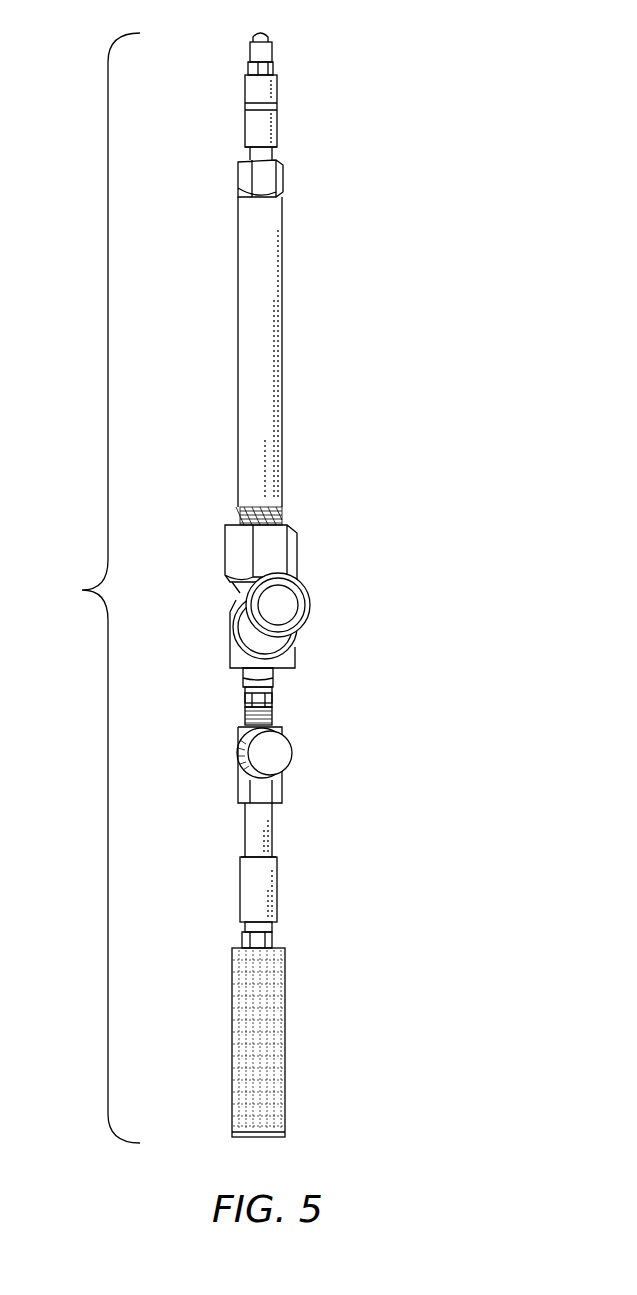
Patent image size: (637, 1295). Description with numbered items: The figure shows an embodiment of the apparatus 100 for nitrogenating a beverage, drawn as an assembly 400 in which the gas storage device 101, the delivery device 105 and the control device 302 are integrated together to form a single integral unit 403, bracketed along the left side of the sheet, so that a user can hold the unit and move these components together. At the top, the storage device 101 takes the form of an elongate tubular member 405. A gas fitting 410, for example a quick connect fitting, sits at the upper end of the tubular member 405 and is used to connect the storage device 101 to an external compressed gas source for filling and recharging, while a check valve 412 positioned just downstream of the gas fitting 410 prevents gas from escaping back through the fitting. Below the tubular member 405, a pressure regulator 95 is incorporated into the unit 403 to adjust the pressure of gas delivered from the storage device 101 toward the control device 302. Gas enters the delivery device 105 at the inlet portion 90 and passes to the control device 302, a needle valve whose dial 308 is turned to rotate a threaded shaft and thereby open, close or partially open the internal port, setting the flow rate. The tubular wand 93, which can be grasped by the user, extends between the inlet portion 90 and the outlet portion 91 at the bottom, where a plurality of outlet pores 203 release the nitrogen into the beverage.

The apparatus 400 is at (413, 243).
The integral unit 403 is at (85, 588).
The gas fitting 410 is at (272, 52).
The check valve 412 is at (277, 113).
The storage device 101 is at (296, 258).
The elongate tubular member 405 is at (282, 333).
The pressure regulator 95 is at (313, 605).
The inlet portion 90 is at (285, 698).
The control device 302 is at (318, 765).
The dial 308 is at (296, 763).
The tubular wand 93 is at (277, 880).
The delivery device 105 is at (317, 987).
The apparatus 100 is at (285, 1028).
The outlet pores 203 is at (267, 1082).
The outlet portion 91 is at (217, 1065).